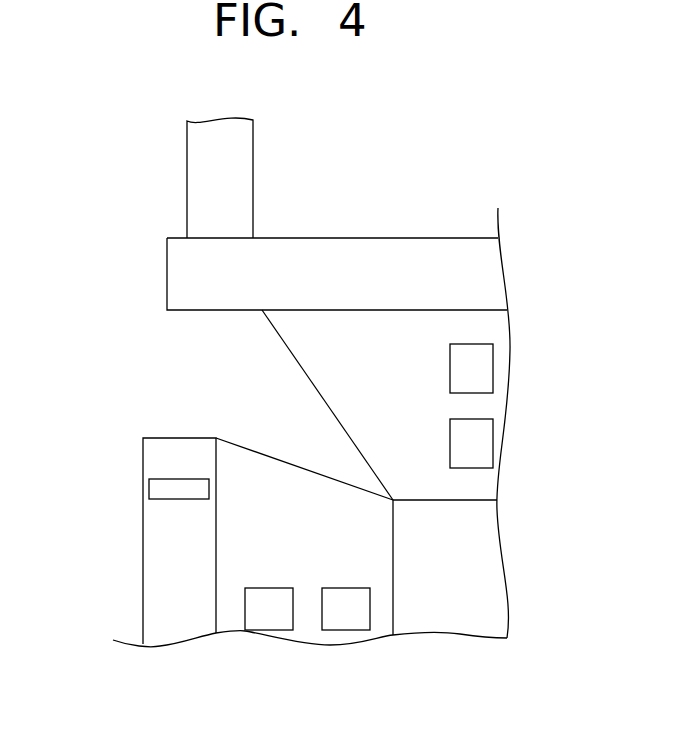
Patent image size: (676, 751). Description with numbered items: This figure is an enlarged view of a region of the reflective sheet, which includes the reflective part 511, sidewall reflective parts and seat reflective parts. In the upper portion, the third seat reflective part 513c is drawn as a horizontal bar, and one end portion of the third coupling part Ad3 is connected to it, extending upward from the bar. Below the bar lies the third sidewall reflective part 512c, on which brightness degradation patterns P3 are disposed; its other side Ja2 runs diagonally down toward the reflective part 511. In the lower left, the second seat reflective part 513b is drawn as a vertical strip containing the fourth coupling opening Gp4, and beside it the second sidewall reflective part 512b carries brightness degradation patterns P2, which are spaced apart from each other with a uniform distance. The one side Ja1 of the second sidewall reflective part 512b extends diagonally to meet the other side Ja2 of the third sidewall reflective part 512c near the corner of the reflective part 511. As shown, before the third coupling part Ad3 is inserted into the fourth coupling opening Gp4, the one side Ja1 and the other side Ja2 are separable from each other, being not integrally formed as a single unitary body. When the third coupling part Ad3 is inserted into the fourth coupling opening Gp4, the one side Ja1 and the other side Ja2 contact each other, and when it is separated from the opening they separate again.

The third coupling part Ad3 is at (200, 188).
The third seat reflective part 513c is at (310, 253).
The third sidewall reflective part 512c is at (420, 322).
The other side of the third sidewall reflective part Ja2 is at (303, 372).
The one side of the second sidewall reflective part Ja1 is at (305, 470).
The brightness degradation pattern P3 is at (482, 368).
The second seat reflective part 513b is at (158, 535).
The fourth coupling opening Gp4 is at (158, 488).
The second sidewall reflective part 512b is at (227, 593).
The brightness degradation pattern P2 is at (273, 618).
The reflective part 511 is at (452, 622).